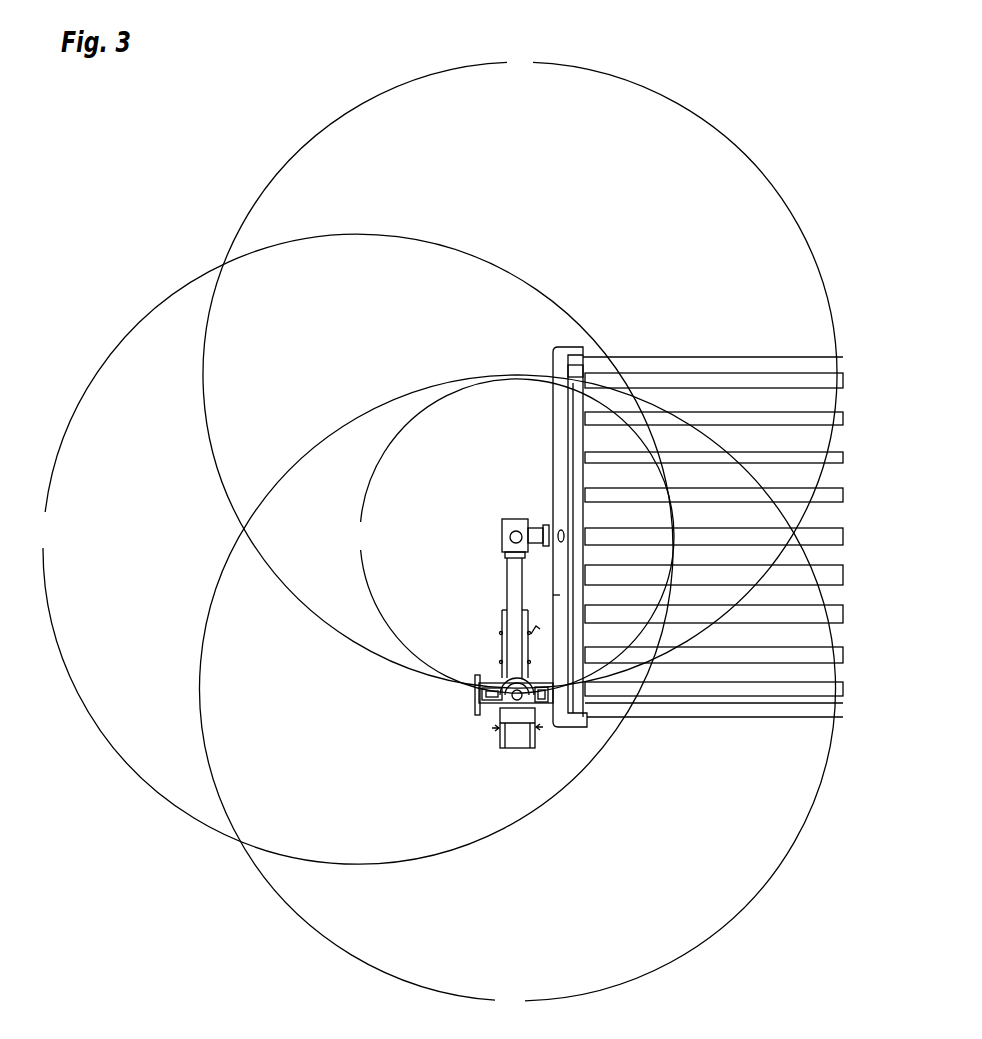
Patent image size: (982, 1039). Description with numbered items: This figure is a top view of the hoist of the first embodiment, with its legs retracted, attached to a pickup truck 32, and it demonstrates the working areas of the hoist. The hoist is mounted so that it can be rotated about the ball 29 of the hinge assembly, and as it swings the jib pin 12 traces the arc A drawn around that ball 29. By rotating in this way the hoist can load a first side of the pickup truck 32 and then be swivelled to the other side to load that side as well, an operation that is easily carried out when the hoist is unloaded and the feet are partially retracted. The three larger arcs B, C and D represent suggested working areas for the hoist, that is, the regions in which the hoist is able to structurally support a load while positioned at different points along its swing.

The jib pin 12 is at (516, 700).
The ball 29 is at (513, 520).
The pickup truck 32 is at (706, 356).
The arc A is at (512, 536).
The arc B is at (518, 695).
The arc C is at (355, 549).
The arc D is at (520, 369).